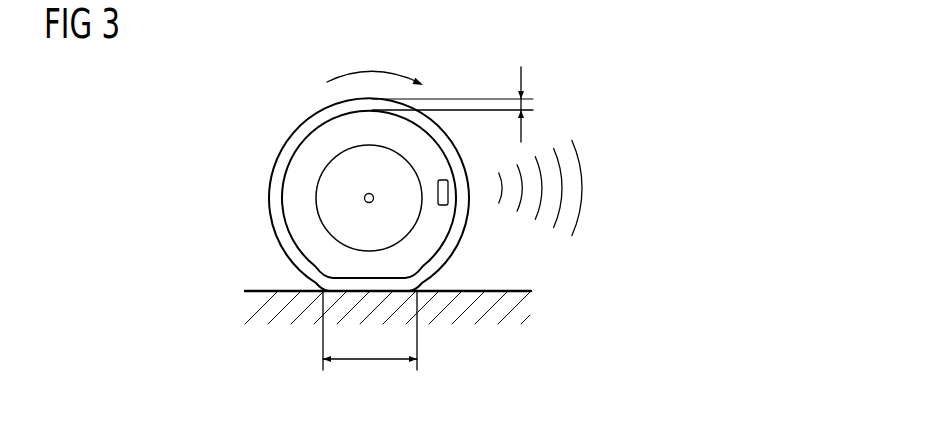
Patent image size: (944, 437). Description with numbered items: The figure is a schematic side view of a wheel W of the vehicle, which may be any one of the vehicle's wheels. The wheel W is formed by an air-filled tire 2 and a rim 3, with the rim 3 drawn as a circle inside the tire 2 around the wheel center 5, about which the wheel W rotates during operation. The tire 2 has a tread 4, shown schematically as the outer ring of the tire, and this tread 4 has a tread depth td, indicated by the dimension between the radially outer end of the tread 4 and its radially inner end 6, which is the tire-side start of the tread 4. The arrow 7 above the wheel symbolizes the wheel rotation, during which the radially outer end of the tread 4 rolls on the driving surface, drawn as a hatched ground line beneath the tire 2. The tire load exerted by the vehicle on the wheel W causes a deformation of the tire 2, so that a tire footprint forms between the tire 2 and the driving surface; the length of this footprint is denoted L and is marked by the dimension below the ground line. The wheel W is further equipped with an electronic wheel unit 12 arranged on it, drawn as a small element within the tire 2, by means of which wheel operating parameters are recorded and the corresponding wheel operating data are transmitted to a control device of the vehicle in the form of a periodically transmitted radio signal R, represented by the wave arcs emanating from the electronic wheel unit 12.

The tire 2 is at (337, 194).
The rim 3 is at (397, 217).
The tread 4 is at (266, 186).
The wheel center 5 is at (363, 198).
The radially inner end of the tread 6 is at (283, 217).
The arrow 7 is at (372, 72).
The electronic wheel unit 12 is at (447, 200).
The wheel W is at (272, 82).
The radio signal R is at (615, 146).
The length of the tire footprint L is at (370, 330).
The tread depth td is at (466, 104).